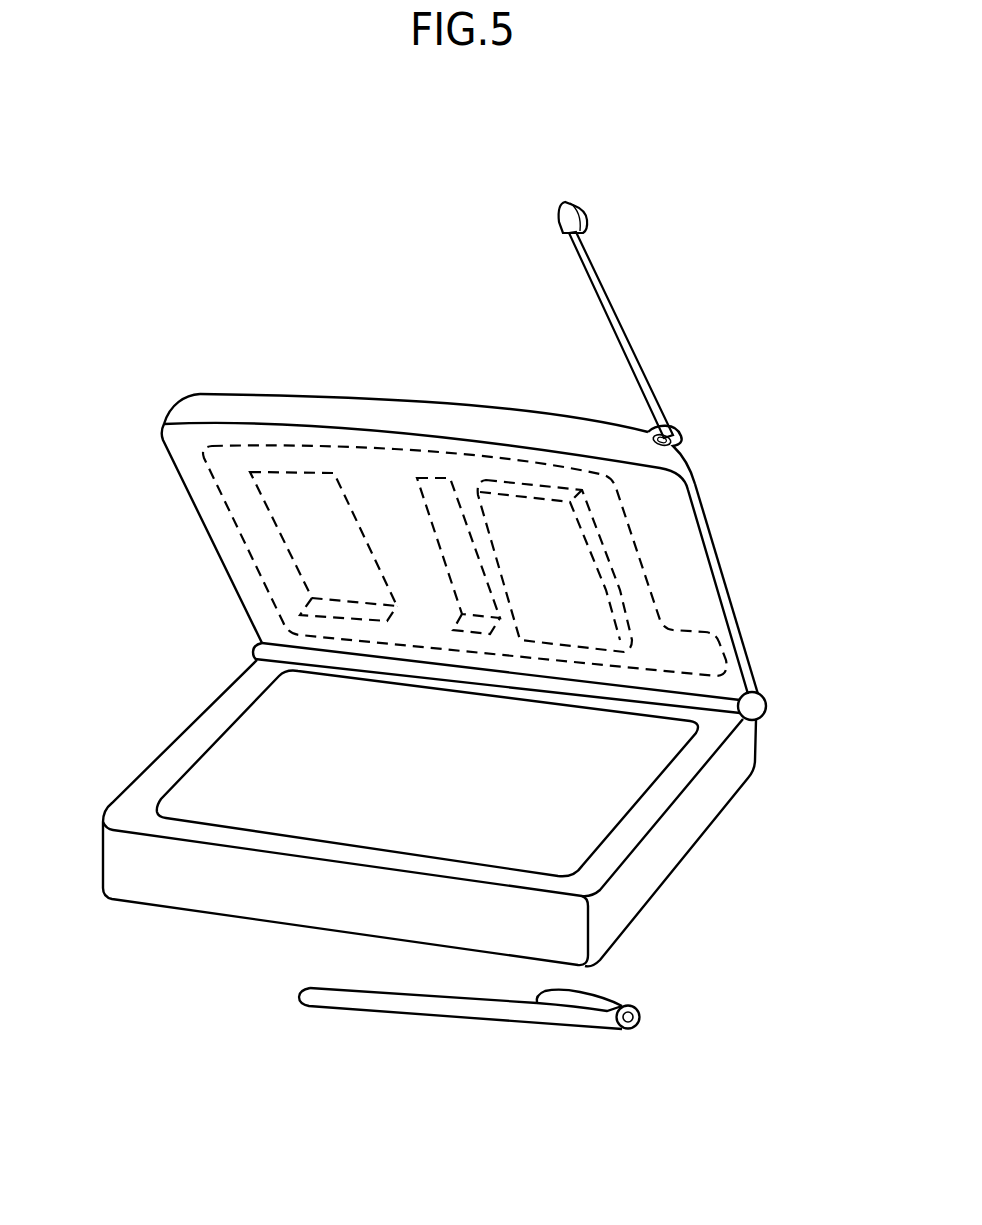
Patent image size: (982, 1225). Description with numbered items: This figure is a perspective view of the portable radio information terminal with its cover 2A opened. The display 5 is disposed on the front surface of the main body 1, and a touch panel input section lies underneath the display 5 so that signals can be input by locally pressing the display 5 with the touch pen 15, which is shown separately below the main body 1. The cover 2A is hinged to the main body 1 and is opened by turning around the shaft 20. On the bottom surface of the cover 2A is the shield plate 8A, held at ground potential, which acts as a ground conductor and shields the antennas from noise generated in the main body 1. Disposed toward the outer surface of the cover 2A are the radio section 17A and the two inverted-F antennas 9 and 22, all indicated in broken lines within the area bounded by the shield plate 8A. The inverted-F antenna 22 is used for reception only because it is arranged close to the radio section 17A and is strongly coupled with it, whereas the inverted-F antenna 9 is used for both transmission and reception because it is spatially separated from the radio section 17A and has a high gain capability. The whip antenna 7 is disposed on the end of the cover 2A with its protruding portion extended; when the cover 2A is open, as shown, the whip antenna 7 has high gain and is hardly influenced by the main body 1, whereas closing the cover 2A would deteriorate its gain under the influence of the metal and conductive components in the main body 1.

The main body 1 is at (707, 830).
The cover 2A is at (720, 544).
The display 5 is at (200, 727).
The whip antenna 7 is at (623, 323).
The shield plate 8A is at (227, 518).
The inverted-F antenna 9 is at (295, 472).
The inverted-F antenna 22 is at (436, 478).
The radio section 17A is at (528, 480).
The shaft 20 is at (767, 707).
The touch pen 15 is at (547, 1027).